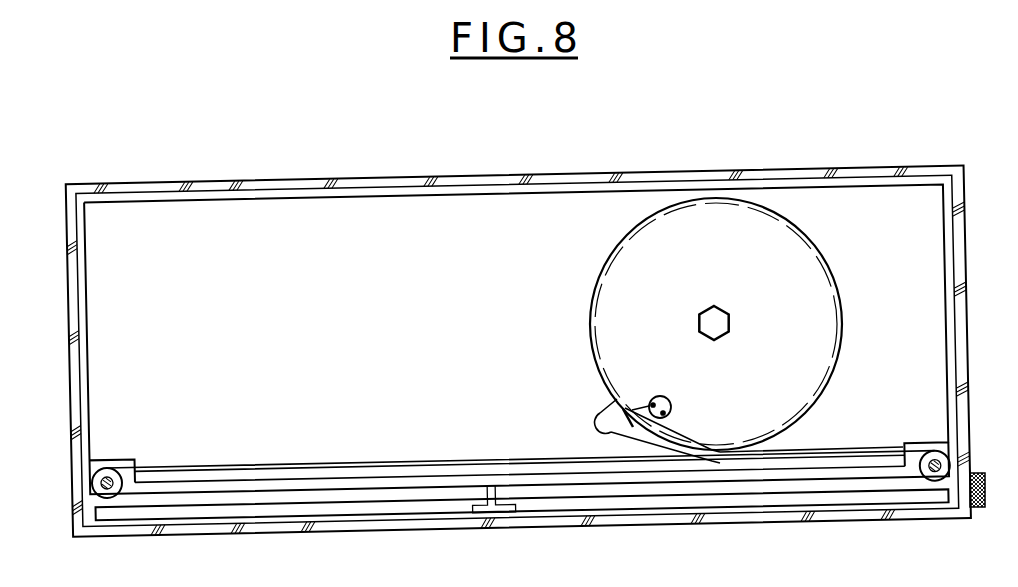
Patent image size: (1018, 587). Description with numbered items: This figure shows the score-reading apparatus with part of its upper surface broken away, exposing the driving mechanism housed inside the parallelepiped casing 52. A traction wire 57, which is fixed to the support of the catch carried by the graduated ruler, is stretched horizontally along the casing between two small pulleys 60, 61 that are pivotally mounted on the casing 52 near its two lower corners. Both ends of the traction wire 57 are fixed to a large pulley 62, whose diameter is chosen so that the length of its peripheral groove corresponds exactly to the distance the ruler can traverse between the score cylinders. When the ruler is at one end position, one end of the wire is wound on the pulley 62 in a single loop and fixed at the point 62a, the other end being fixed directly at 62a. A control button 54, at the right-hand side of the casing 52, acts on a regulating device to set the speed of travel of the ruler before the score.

The casing 52 is at (750, 176).
The control button 54 is at (976, 508).
The traction wire 57 is at (599, 484).
The pulley 60 is at (92, 482).
The pulley 61 is at (926, 458).
The pulley 62 is at (617, 275).
The fixing point 62a is at (670, 403).